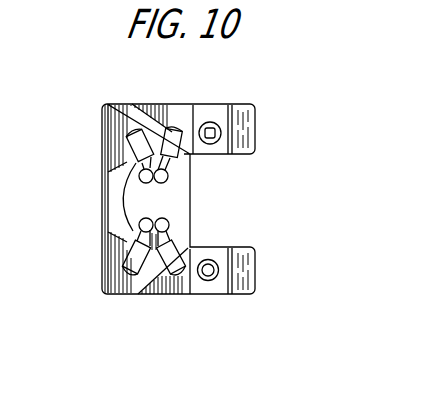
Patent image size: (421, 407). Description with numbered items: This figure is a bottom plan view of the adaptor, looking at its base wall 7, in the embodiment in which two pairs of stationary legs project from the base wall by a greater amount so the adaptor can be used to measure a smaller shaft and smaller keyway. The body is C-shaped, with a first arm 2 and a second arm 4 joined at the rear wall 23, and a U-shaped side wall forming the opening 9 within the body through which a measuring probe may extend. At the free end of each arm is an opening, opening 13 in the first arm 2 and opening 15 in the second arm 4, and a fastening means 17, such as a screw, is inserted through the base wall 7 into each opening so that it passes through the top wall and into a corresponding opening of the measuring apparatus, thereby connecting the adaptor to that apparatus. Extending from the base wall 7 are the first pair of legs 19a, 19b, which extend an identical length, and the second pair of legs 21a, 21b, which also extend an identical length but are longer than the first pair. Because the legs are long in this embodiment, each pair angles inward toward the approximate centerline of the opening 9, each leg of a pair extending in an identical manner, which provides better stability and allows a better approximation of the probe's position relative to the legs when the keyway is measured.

The first arm 2 is at (120, 295).
The second arm 4 is at (117, 104).
The base wall surface 7 is at (123, 250).
The opening 9 is at (203, 227).
The opening 13 is at (208, 281).
The opening 15 is at (208, 122).
The fastening means 17 is at (210, 133).
The first pair of legs 19a is at (157, 295).
The first pair of legs 19b is at (165, 128).
The second pair of legs 21a is at (172, 250).
The second pair of legs 21b is at (174, 160).
The rear wall 23 is at (102, 208).